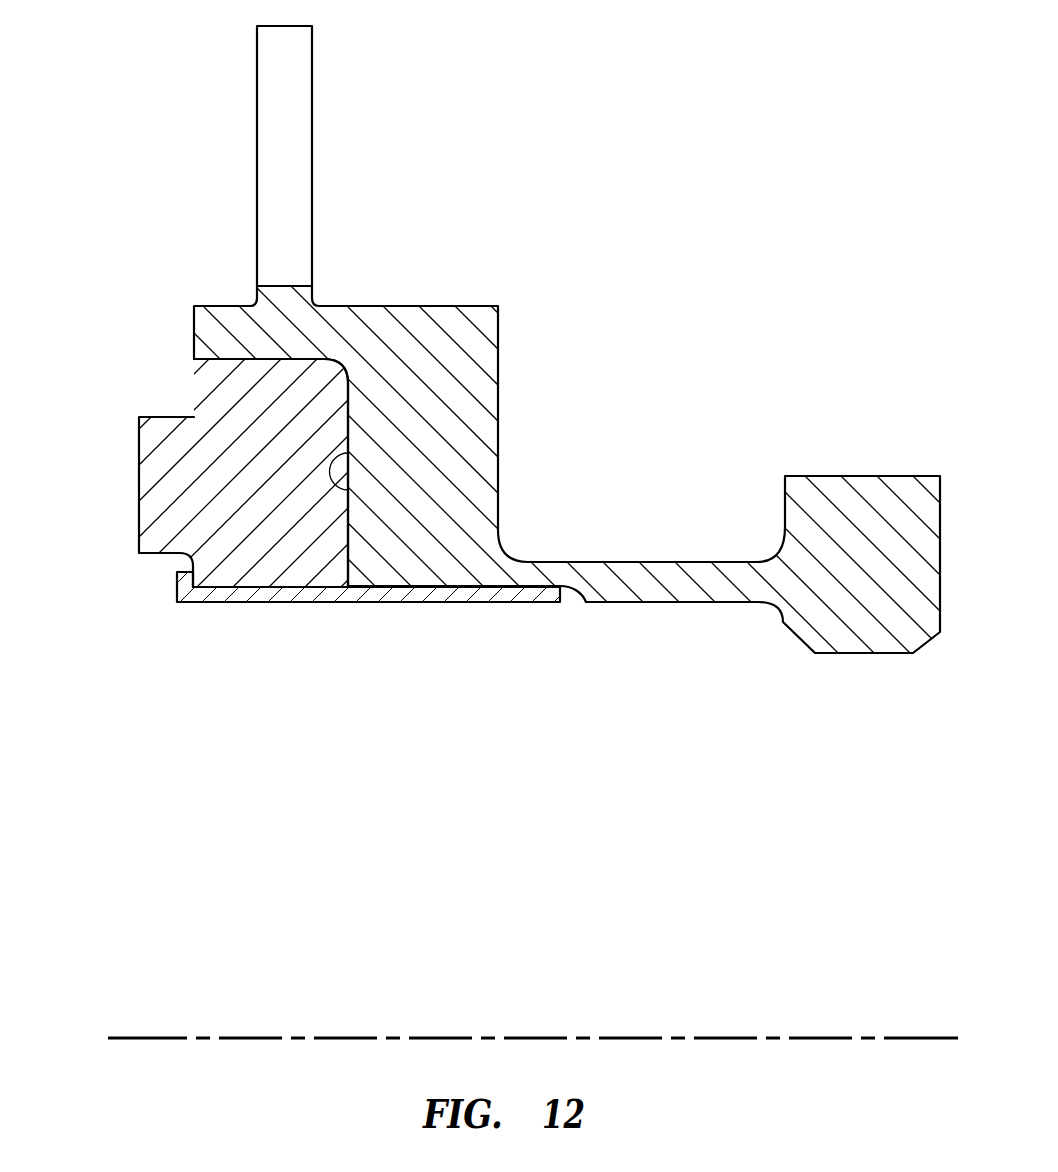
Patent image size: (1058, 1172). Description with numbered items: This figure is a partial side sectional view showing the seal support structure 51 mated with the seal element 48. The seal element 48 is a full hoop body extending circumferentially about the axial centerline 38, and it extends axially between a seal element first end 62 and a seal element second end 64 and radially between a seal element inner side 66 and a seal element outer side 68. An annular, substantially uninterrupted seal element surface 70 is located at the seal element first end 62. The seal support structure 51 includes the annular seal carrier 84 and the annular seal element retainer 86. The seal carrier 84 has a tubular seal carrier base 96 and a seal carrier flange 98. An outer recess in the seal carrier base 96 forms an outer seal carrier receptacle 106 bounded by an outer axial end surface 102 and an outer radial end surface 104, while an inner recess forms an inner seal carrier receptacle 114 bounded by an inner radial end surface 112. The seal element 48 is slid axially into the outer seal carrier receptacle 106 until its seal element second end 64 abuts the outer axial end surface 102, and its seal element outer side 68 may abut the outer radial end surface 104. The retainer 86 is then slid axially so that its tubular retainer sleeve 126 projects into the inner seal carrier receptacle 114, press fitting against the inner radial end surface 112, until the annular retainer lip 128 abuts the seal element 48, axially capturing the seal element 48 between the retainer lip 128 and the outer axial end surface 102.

The axial centerline 38 is at (940, 1037).
The seal element 48 is at (129, 496).
The seal support structure 51 is at (538, 673).
The seal element first end 62 is at (284, 473).
The seal element surface 70 is at (139, 450).
The seal element second end 64 is at (353, 432).
The seal element inner side 66 is at (212, 590).
The seal element outer side 68 is at (211, 352).
The seal carrier 84 is at (499, 292).
The seal element retainer 86 is at (252, 620).
The seal carrier base 96 is at (503, 354).
The seal carrier flange 98 is at (316, 141).
The outer axial end surface 102 is at (349, 490).
The outer radial end surface 104 is at (256, 361).
The outer seal carrier receptacle 106 is at (180, 363).
The inner radial end surface 112 is at (427, 604).
The inner seal carrier receptacle 114 is at (576, 608).
The retainer sleeve 126 is at (307, 604).
The retainer lip 128 is at (177, 589).